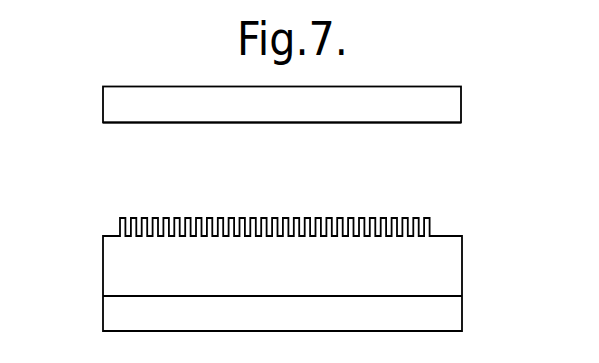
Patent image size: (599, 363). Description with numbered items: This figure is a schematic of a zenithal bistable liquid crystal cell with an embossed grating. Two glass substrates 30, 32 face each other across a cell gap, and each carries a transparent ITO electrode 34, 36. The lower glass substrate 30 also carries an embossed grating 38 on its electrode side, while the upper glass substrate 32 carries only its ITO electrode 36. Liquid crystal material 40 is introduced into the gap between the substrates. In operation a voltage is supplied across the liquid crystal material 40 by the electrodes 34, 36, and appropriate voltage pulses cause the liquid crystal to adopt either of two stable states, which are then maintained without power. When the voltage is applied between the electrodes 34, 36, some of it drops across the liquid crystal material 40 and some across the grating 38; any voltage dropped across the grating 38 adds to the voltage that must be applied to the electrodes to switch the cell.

The glass substrate 30 is at (453, 316).
The glass substrate 32 is at (455, 101).
The ITO electrode 34 is at (108, 296).
The ITO electrode 36 is at (106, 122).
The embossed grating 38 is at (448, 254).
The liquid crystal material 40 is at (443, 172).